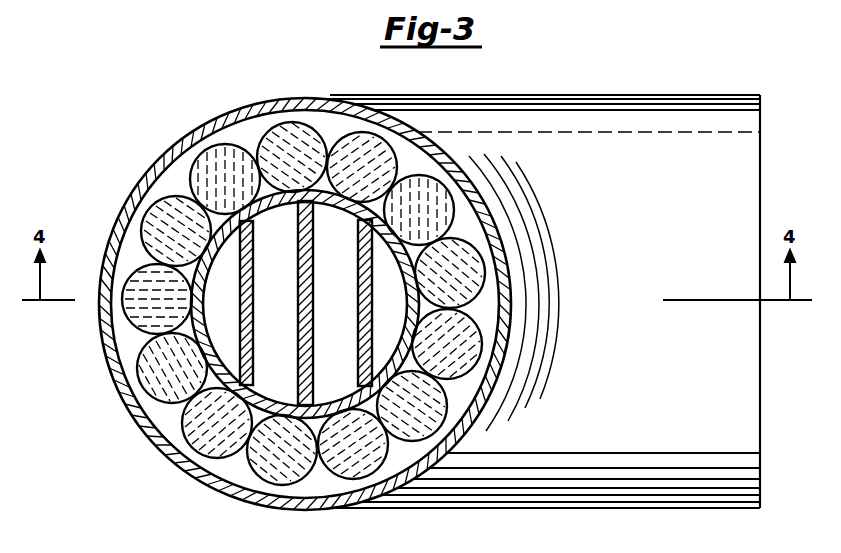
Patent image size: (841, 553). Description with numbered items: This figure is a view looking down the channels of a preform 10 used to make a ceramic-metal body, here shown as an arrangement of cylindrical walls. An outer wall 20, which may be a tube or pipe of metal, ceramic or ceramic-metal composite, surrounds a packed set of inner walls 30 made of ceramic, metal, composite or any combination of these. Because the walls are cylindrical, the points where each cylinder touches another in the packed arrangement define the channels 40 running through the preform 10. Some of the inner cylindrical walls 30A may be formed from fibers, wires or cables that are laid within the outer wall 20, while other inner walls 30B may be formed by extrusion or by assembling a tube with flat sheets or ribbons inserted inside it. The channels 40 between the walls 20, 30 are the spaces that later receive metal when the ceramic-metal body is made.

The preform 10 is at (148, 117).
The outer wall 20 is at (148, 183).
The inner walls 30 is at (300, 323).
The inner cylindrical walls 30A is at (205, 430).
The inner walls 30B is at (300, 358).
The channel 40 is at (383, 263).